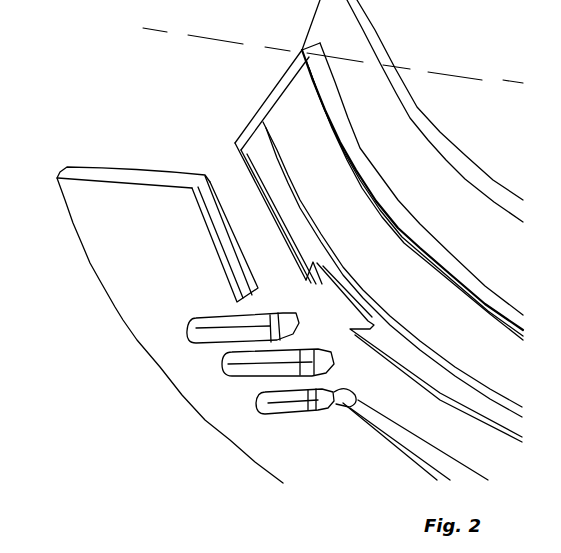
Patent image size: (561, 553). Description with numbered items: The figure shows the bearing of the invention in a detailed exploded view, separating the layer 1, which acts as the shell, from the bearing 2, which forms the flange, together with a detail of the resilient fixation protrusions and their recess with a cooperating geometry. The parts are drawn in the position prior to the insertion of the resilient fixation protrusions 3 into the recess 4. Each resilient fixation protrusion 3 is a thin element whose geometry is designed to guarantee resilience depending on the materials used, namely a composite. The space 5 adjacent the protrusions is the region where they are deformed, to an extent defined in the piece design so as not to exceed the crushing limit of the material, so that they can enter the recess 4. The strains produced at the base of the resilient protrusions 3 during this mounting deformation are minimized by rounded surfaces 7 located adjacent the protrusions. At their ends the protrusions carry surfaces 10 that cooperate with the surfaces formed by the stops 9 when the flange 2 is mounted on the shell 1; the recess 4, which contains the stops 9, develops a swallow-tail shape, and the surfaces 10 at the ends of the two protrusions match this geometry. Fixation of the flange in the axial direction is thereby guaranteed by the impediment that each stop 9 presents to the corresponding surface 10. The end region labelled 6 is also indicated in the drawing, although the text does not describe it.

The layer 1 is at (281, 71).
The bearing 2 is at (147, 207).
The resilient fixation protrusion 3 is at (250, 384).
The recess 4 is at (337, 297).
The space 5 is at (289, 346).
The end face of segment 6 is at (241, 143).
The rounded surfaces 7 is at (263, 415).
The stop 9 is at (312, 260).
The surface 10 is at (279, 319).